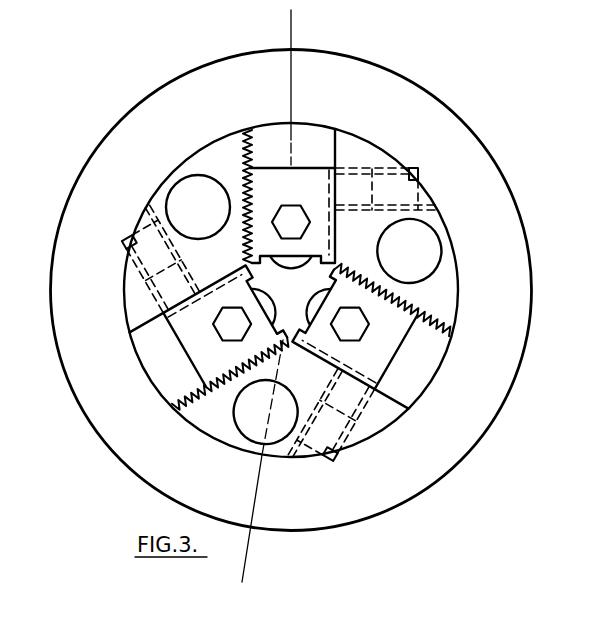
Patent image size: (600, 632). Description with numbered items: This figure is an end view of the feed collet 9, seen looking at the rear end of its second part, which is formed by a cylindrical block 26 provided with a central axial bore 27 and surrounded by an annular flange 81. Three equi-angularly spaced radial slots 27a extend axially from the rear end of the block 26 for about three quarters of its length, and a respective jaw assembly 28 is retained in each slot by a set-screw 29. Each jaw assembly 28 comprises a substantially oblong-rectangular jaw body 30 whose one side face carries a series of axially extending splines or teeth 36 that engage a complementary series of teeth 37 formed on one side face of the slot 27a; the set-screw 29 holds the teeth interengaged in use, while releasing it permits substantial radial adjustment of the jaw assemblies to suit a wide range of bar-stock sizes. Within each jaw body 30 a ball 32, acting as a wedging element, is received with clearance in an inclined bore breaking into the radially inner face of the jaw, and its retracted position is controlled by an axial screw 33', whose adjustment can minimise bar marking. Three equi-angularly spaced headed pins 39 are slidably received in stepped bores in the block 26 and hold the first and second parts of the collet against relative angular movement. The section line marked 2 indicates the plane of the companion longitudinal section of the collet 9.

The feed collet 9 is at (516, 168).
The annular flange 81 is at (350, 72).
The cylindrical block 26 is at (203, 150).
The teeth 37 is at (218, 163).
The jaw body 30 is at (277, 182).
The splines or teeth 36 is at (248, 133).
The jaw assembly 28 is at (300, 167).
The axial bore 27 is at (337, 248).
The radial slots 27a is at (331, 151).
The set-screw 29 is at (128, 240).
The headed pins 39 is at (192, 193).
The axial screw 33' is at (288, 274).
The ball 32 is at (318, 300).
The section line 2- 2 is at (272, 18).